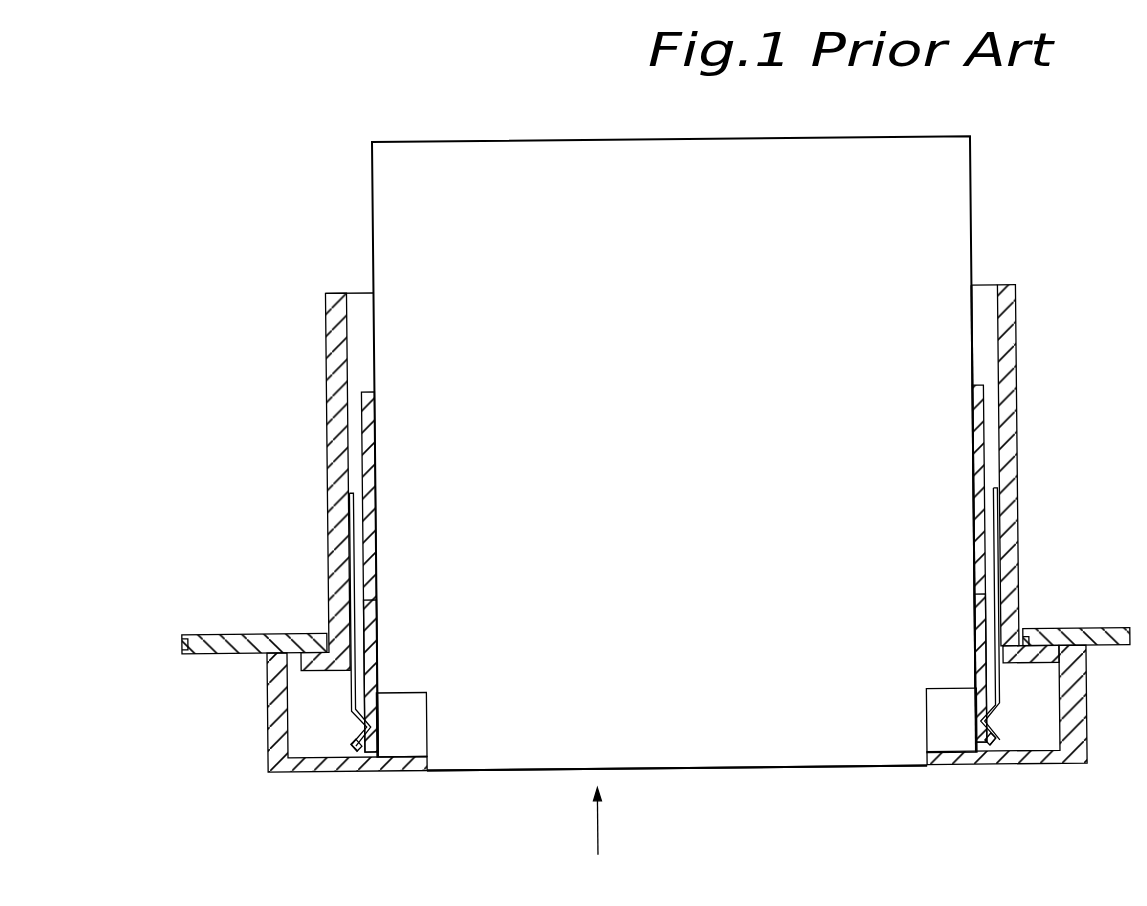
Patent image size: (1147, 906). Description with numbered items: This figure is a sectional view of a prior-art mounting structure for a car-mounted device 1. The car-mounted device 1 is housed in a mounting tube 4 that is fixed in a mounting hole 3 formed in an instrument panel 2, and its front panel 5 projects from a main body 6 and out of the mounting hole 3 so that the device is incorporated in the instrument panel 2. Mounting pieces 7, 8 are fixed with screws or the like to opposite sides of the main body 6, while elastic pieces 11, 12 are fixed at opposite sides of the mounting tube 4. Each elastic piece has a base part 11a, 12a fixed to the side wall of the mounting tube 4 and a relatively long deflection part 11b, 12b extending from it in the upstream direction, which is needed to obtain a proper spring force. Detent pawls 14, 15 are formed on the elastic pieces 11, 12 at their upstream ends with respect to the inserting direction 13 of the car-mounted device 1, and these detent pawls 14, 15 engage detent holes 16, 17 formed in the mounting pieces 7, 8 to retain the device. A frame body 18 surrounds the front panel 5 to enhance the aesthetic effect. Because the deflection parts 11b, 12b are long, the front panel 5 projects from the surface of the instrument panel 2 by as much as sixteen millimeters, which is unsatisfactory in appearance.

The car-mounted device 1 is at (937, 188).
The instrument panel 2 is at (1087, 639).
The mounting hole 3 is at (1025, 646).
The mounting tube 4 is at (1007, 414).
The front panel 5 is at (707, 758).
The main body 6 is at (948, 252).
The mounting piece 7 is at (364, 500).
The mounting piece 8 is at (974, 446).
The elastic piece 11 is at (430, 622).
The base part 11a is at (358, 580).
The deflection part 11b is at (353, 628).
The elastic piece 12 is at (923, 617).
The base part 12a is at (996, 596).
The deflection part 12b is at (975, 691).
The inserting direction 13 is at (593, 832).
The detent pawl 14 is at (346, 722).
The detent pawl 15 is at (979, 728).
The detent hole 16 is at (371, 705).
The detent hole 17 is at (972, 706).
The frame body 18 is at (1019, 768).